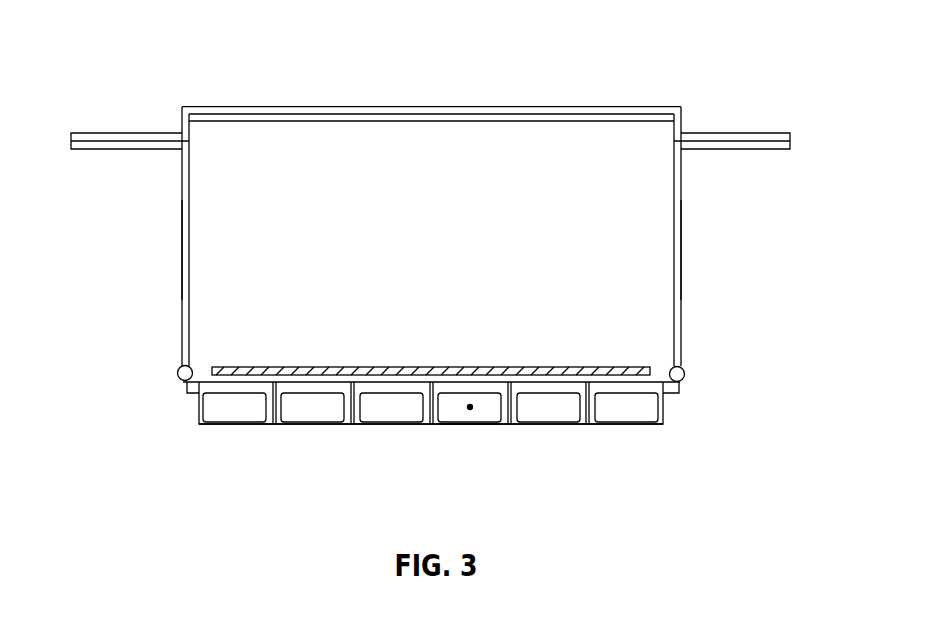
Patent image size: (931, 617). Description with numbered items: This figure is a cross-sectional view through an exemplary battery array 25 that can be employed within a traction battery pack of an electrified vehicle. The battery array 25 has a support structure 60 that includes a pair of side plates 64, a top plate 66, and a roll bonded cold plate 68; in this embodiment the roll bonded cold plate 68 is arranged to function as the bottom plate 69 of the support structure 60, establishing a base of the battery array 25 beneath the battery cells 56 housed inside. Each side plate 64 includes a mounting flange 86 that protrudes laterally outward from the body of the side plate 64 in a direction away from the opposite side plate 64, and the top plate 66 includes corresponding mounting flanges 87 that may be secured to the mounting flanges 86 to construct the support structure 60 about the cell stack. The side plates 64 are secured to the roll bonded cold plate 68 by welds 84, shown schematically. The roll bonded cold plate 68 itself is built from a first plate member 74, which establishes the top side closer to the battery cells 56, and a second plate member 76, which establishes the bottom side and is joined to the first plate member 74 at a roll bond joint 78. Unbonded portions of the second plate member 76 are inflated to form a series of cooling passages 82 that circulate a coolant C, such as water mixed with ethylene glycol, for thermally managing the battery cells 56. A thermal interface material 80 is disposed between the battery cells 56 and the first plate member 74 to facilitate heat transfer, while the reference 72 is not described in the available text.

The battery array 25 is at (556, 86).
The battery cells 56 is at (469, 267).
The support structure 60 is at (706, 109).
The side plates 64 is at (184, 283).
The top plate 66 is at (444, 106).
The roll bonded cold plate 68 is at (339, 437).
The bottom plate 69 is at (472, 426).
The wall structure 72 is at (152, 257).
The first plate member 74 is at (238, 382).
The second plate member 76 is at (262, 426).
The roll bond joint 78 is at (356, 398).
The thermal interface material 80 is at (279, 370).
The cooling passages 82 is at (315, 398).
The welds 84 is at (178, 369).
The mounting flange 86 is at (123, 150).
The mounting flanges 87 is at (96, 133).
The coolant C is at (471, 404).